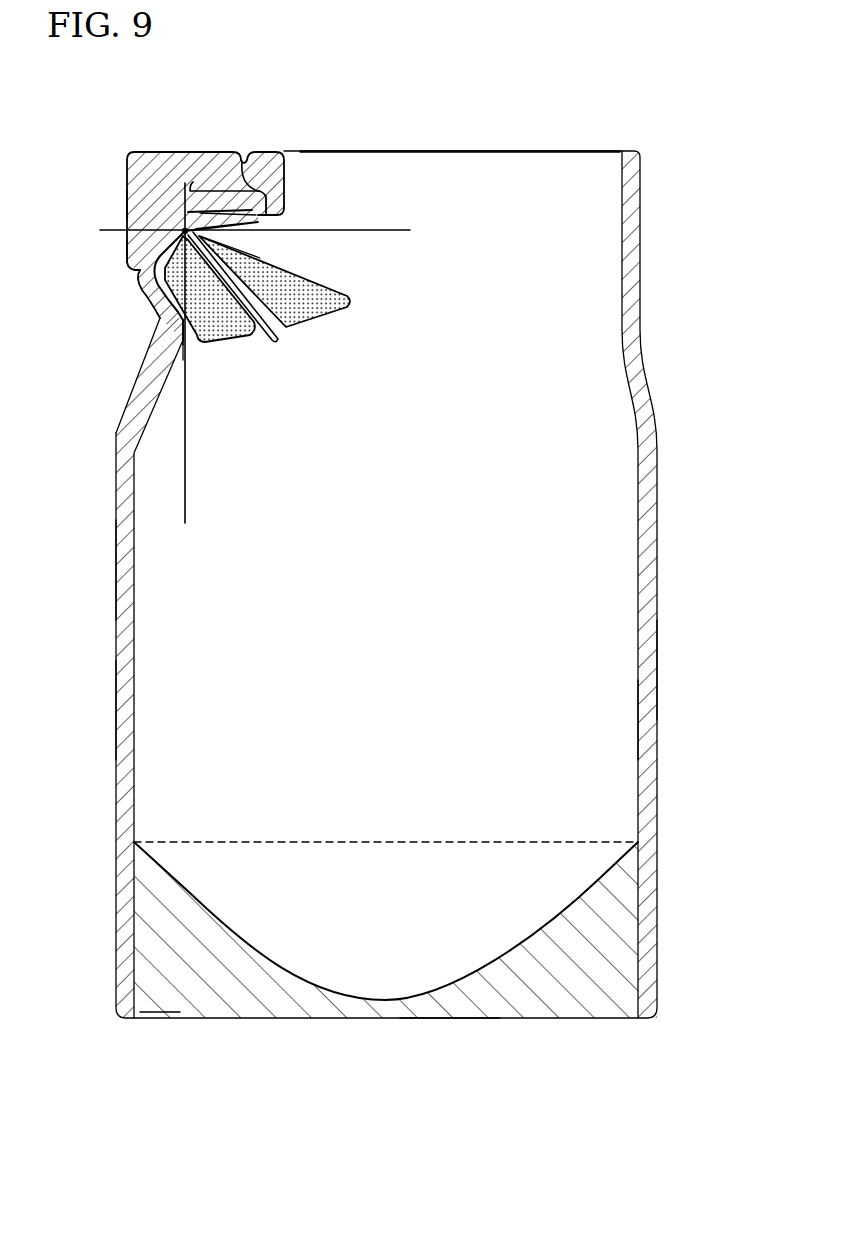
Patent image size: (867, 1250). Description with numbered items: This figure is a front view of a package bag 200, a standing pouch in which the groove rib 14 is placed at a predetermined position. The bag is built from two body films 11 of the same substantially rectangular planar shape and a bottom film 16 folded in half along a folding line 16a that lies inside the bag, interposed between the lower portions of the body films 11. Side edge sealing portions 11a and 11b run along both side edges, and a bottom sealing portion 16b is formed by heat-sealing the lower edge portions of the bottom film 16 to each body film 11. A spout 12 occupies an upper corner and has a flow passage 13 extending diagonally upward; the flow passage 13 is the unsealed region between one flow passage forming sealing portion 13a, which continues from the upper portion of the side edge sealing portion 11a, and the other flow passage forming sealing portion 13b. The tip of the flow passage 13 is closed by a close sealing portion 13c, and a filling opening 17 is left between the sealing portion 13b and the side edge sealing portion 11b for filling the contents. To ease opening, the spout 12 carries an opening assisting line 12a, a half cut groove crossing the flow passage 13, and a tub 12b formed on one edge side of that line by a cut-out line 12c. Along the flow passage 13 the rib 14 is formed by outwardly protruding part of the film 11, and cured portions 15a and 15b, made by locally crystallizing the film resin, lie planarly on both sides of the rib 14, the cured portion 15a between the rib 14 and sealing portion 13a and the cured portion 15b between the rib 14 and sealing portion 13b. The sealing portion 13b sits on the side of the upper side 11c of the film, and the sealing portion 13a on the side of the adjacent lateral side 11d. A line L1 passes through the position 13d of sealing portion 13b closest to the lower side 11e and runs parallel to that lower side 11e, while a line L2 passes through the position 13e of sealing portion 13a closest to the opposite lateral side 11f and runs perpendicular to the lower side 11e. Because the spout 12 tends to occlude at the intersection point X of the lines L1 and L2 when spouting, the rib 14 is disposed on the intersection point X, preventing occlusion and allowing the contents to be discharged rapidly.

The package bag 200 is at (672, 160).
The body film 11 is at (570, 548).
The side edge sealing portion 11a is at (122, 563).
The side edge sealing portion 11b is at (652, 670).
The upper side 11c is at (400, 151).
The lateral side 11d is at (116, 702).
The lower side 11e is at (447, 1018).
The lateral side 11f is at (657, 720).
The spout 12 is at (127, 158).
The opening assisting line 12a is at (166, 255).
The tub 12b is at (220, 155).
The cut-out line 12c is at (262, 200).
The flow passage 13 is at (185, 228).
The flow passage forming sealing portion 13a is at (166, 342).
The flow passage forming sealing portion 13b is at (258, 222).
The close sealing portion 13c is at (143, 206).
The position 13d is at (257, 238).
The position 13e is at (187, 344).
The groove rib 14 is at (278, 340).
The cured portion 15a is at (242, 343).
The cured portion 15b is at (352, 300).
The bottom film 16 is at (668, 842).
The folding line 16a is at (315, 840).
The bottom sealing portion 16b is at (190, 1003).
The filling opening 17 is at (480, 163).
The line L1 is at (264, 252).
The line L2 is at (188, 490).
The intersection point X is at (181, 233).